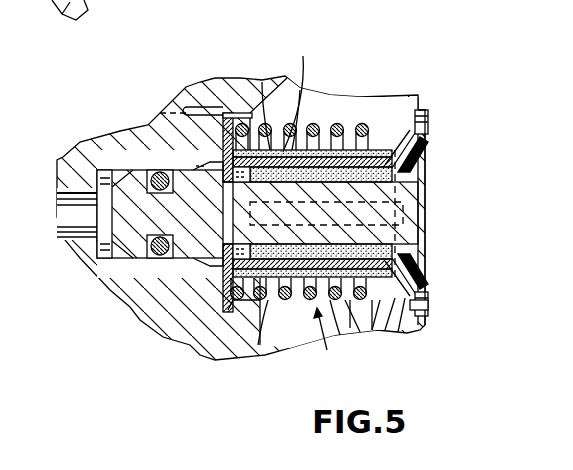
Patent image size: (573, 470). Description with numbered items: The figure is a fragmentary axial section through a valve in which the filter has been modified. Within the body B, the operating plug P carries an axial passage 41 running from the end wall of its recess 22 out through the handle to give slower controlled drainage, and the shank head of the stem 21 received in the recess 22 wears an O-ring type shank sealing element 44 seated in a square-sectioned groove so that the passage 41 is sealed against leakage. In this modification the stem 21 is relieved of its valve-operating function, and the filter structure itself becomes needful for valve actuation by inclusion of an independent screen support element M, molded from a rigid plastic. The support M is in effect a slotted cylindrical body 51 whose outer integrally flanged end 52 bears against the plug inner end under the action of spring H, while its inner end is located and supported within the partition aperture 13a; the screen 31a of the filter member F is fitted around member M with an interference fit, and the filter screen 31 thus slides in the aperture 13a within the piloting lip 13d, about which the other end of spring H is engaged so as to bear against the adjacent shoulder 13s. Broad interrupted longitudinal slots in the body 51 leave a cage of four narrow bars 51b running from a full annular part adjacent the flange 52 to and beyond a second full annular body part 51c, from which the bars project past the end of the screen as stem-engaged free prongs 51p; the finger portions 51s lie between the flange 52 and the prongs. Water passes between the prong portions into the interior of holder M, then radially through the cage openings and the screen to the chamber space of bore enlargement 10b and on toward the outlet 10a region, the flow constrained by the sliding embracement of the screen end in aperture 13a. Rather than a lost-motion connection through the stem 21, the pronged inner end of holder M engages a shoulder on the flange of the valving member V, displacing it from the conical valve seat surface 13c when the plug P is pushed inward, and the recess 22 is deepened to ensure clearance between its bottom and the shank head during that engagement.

The filter screen 31 is at (0, 0).
The body B is at (185, 88).
The plug P is at (120, 131).
The shank sealing element 44 is at (160, 171).
The axial passage 41 is at (60, 193).
The recess 22 is at (70, 229).
The flanged end 52 is at (256, 98).
The slotted cylindrical body 51 is at (272, 78).
The screen 31a is at (297, 94).
The spring H is at (314, 121).
The screen support element M is at (325, 151).
The piloting lip 13d is at (398, 150).
The partition aperture 13a is at (398, 150).
The shoulder 13s is at (402, 150).
The conical valve seat surface 13c is at (425, 130).
The valving member V is at (432, 136).
The stem 21 is at (326, 214).
The bore enlargement 10b is at (300, 336).
The filter member F is at (319, 335).
The finger stem 51s is at (258, 342).
The narrow bars 51b is at (353, 328).
The second full annular body part 51c is at (375, 330).
The free prongs 51p is at (387, 327).
The housing tab 10a is at (418, 305).